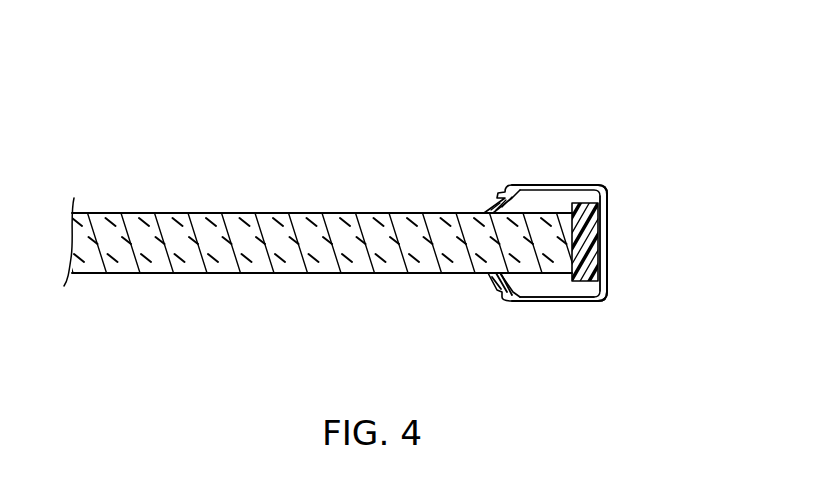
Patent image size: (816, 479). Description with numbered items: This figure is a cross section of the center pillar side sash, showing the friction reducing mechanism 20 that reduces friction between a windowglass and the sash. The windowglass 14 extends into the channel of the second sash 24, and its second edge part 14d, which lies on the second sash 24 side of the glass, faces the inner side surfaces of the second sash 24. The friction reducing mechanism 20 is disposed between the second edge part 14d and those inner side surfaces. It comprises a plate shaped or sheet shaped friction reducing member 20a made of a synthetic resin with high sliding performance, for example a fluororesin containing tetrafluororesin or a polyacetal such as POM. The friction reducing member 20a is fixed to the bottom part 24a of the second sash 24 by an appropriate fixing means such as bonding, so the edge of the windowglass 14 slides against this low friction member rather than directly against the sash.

The windowglass 14 is at (224, 209).
The second edge part 14d is at (603, 270).
The friction reducing mechanism 20 is at (595, 189).
The friction reducing member 20a is at (607, 216).
The second sash 24 is at (558, 176).
The bottom part 24a is at (587, 283).